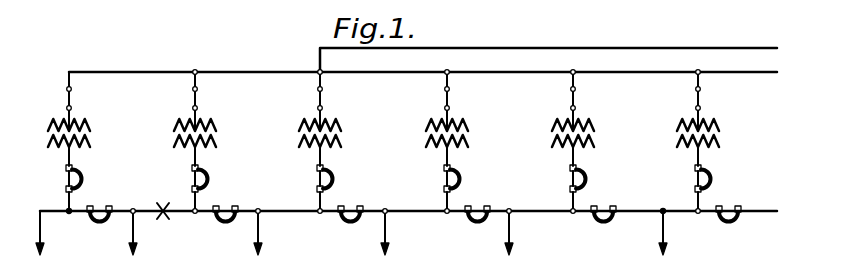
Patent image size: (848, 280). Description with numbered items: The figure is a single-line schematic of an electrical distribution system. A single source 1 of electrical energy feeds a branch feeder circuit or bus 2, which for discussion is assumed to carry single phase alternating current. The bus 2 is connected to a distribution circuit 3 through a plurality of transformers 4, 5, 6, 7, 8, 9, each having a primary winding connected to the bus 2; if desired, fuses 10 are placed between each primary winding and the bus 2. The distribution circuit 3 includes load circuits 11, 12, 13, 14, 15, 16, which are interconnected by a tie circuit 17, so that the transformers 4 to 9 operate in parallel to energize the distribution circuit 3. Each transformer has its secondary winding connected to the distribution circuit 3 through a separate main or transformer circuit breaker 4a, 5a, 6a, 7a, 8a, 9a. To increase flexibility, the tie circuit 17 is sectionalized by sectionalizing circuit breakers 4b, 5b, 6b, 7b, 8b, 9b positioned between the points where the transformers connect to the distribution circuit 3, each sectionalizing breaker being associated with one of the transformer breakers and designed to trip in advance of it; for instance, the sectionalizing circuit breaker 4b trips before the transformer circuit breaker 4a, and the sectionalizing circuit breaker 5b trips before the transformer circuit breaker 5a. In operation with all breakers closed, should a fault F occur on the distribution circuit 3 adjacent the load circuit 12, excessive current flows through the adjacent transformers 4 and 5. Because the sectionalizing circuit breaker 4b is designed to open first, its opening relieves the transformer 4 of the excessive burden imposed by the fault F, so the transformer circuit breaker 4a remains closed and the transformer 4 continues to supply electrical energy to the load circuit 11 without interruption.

The source of electrical energy 1 is at (572, 47).
The branch feeder circuit or bus 2 is at (732, 73).
The distribution circuit 3 is at (429, 249).
The transformer 4 is at (80, 142).
The transformer 5 is at (206, 142).
The transformer 6 is at (331, 142).
The transformer 7 is at (458, 142).
The transformer 8 is at (584, 142).
The transformer 9 is at (709, 142).
The transformer circuit breaker 4a is at (91, 188).
The transformer circuit breaker 5a is at (217, 188).
The transformer circuit breaker 6a is at (342, 188).
The transformer circuit breaker 7a is at (469, 188).
The transformer circuit breaker 8a is at (595, 188).
The transformer circuit breaker 9a is at (720, 188).
The sectionalizing circuit breaker 4b is at (89, 225).
The sectionalizing circuit breaker 5b is at (216, 225).
The sectionalizing circuit breaker 6b is at (341, 225).
The sectionalizing circuit breaker 7b is at (473, 225).
The sectionalizing circuit breaker 8b is at (597, 225).
The sectionalizing circuit breaker 9b is at (744, 227).
The fuse 10 is at (696, 100).
The load circuit 11 is at (31, 261).
The load circuit 12 is at (124, 261).
The load circuit 13 is at (249, 261).
The load circuit 14 is at (376, 261).
The load circuit 15 is at (500, 261).
The load circuit 16 is at (654, 261).
The tie circuit 17 is at (707, 213).
The fault F is at (163, 204).